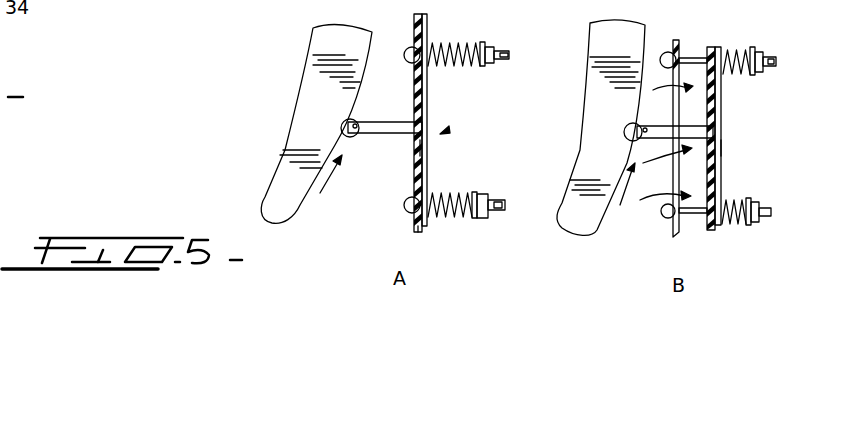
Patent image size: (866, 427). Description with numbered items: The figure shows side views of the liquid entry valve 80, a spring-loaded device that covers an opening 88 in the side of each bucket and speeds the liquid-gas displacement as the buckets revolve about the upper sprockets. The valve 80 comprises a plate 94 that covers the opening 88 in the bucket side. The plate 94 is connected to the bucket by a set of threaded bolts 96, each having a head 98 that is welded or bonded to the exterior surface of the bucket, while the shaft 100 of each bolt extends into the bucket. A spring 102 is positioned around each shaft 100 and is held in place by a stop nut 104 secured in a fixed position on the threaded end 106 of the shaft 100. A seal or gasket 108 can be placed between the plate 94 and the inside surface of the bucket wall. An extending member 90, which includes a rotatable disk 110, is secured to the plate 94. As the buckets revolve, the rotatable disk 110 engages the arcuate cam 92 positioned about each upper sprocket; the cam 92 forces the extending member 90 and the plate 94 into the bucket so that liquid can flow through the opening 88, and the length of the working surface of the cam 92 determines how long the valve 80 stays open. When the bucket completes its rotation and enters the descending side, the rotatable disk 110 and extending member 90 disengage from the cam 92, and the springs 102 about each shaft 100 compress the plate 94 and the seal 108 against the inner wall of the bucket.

In FIG. 5A, the liquid entry valve 80 is at (446, 130).
In FIG. 5A, the opening 88 is at (412, 177).
In FIG. 5B, the opening 88 is at (670, 136).
In FIG. 5A, the extending member 90 is at (385, 137).
In FIG. 5B, the extending member 90 is at (717, 163).
In FIG. 5A, the cam 92 is at (340, 108).
In FIG. 5B, the cam 92 is at (627, 104).
In FIG. 5A, the plate 94 is at (427, 96).
In FIG. 5B, the plate 94 is at (722, 96).
In FIG. 5A, the threaded bolt 96 is at (426, 210).
In FIG. 5B, the threaded bolt 96 is at (688, 214).
In FIG. 5A, the head 98 is at (405, 209).
In FIG. 5B, the head 98 is at (664, 214).
In FIG. 5A, the shaft 100 is at (470, 192).
In FIG. 5B, the shaft 100 is at (724, 203).
In FIG. 5A, the spring 102 is at (447, 212).
In FIG. 5B, the spring 102 is at (736, 222).
In FIG. 5A, the stop nut 104 is at (497, 197).
In FIG. 5B, the stop nut 104 is at (765, 218).
In FIG. 5A, the threaded end 106 is at (507, 207).
In FIG. 5B, the threaded end 106 is at (772, 213).
In FIG. 5A, the seal 108 is at (420, 153).
In FIG. 5B, the seal 108 is at (727, 148).
In FIG. 5A, the rotatable disk 110 is at (349, 119).
In FIG. 5B, the rotatable disk 110 is at (628, 135).